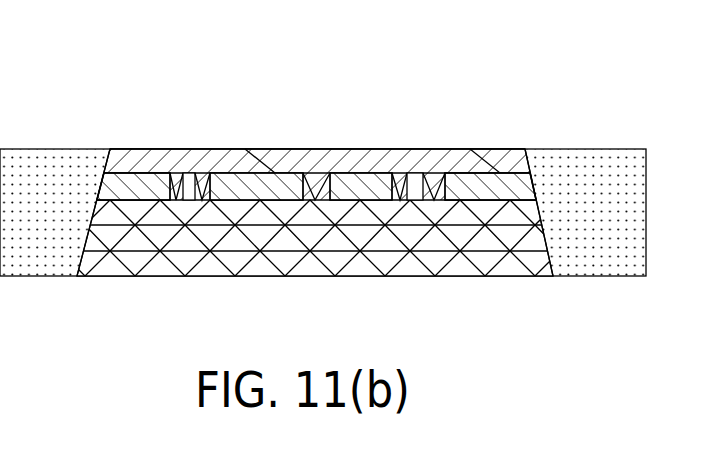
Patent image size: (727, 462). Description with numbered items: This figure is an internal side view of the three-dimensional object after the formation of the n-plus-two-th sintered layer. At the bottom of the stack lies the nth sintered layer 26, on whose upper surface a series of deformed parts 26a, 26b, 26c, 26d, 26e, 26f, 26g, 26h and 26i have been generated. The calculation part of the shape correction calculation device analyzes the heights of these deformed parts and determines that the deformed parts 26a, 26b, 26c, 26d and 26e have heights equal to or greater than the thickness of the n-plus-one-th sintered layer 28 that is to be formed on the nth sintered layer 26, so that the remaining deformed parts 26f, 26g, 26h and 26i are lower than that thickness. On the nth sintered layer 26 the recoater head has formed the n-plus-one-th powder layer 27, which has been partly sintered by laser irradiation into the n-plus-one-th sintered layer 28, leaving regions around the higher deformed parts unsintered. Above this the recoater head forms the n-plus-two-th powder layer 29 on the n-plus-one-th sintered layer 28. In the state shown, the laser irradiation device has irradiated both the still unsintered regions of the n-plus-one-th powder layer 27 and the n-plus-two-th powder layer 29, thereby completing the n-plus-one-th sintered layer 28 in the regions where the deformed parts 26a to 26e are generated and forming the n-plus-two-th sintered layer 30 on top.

The nth sintered layer 26 is at (315, 212).
The deformed part 26a is at (168, 172).
The deformed part 26b is at (202, 173).
The deformed part 26c is at (295, 146).
The deformed part 26d is at (398, 150).
The deformed part 26e is at (433, 172).
The deformed part 26f is at (110, 195).
The deformed part 26g is at (262, 155).
The deformed part 26h is at (328, 178).
The deformed part 26i is at (543, 158).
The n+1th powder layer 27 is at (325, 162).
The n+1th sintered layer 28 is at (480, 183).
The n+2th powder layer 29 is at (400, 188).
The n+2th sintered layer 30 is at (188, 176).